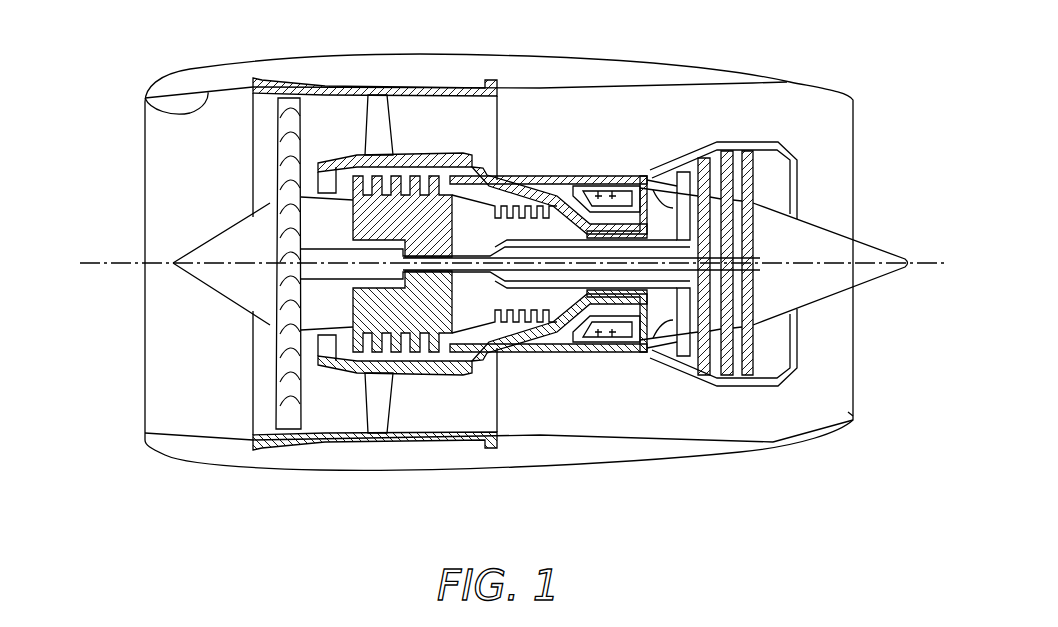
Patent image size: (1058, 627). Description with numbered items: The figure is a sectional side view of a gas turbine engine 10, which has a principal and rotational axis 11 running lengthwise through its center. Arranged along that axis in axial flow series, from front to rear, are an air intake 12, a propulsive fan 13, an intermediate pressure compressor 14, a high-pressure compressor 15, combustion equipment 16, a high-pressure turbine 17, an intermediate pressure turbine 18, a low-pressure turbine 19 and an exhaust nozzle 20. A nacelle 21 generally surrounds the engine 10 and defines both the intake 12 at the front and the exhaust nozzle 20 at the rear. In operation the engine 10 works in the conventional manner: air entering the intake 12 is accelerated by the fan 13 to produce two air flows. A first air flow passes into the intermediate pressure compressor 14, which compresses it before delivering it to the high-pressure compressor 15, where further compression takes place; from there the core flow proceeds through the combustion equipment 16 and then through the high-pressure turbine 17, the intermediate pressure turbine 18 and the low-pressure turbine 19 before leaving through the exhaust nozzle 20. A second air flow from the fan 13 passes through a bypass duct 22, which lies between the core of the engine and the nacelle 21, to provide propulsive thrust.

The gas turbine engine 10 is at (131, 135).
The principal and rotational axis 11 is at (98, 262).
The air intake 12 is at (145, 97).
The propulsive fan 13 is at (277, 382).
The intermediate pressure compressor 14 is at (397, 374).
The high-pressure compressor 15 is at (513, 174).
The combustion equipment 16 is at (597, 346).
The high-pressure turbine 17 is at (632, 353).
The intermediate pressure turbine 18 is at (648, 176).
The low-pressure turbine 19 is at (704, 378).
The exhaust nozzle 20 is at (854, 419).
The nacelle 21 is at (748, 81).
The bypass duct 22 is at (423, 134).